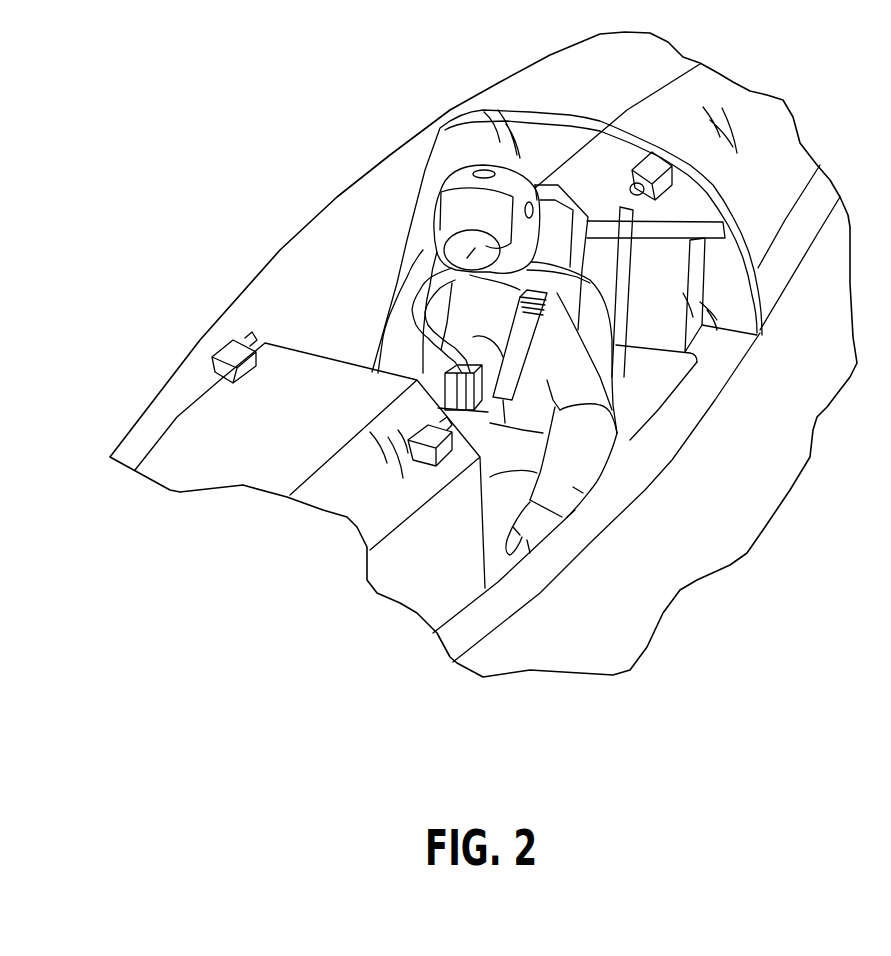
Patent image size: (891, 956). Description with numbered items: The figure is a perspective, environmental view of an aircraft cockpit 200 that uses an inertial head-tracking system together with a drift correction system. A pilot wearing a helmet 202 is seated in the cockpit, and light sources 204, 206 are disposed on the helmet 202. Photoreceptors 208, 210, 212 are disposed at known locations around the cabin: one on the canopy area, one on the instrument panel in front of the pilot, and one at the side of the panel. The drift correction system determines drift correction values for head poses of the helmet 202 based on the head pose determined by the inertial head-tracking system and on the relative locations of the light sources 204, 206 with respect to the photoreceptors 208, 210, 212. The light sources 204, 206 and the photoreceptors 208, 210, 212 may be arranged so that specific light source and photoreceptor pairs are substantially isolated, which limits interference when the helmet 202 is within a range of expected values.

The aircraft cockpit 200 is at (150, 126).
The helmet 202 is at (458, 182).
The light source 204 is at (483, 165).
The light source 206 is at (700, 64).
The photoreceptor 208 is at (667, 158).
The photoreceptor 210 is at (437, 455).
The photoreceptor 212 is at (223, 343).